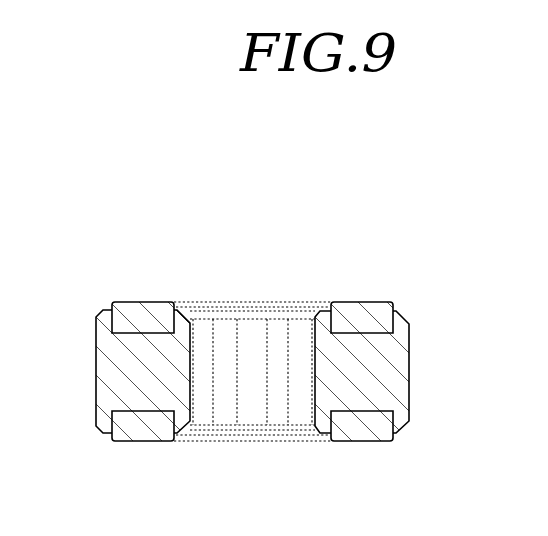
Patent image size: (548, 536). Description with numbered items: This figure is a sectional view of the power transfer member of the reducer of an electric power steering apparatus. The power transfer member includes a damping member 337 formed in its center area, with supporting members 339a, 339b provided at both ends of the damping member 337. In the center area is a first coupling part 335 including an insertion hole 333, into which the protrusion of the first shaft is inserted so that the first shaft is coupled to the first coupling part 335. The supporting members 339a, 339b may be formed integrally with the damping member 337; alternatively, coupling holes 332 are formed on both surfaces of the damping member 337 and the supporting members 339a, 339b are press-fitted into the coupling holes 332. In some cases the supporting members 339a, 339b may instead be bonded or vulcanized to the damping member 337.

The coupling hole 332 is at (143, 410).
The insertion hole 333 is at (197, 366).
The first coupling part 335 is at (256, 383).
The damping member 337 is at (390, 370).
The supporting member 339a is at (155, 302).
The supporting member 339b is at (142, 432).